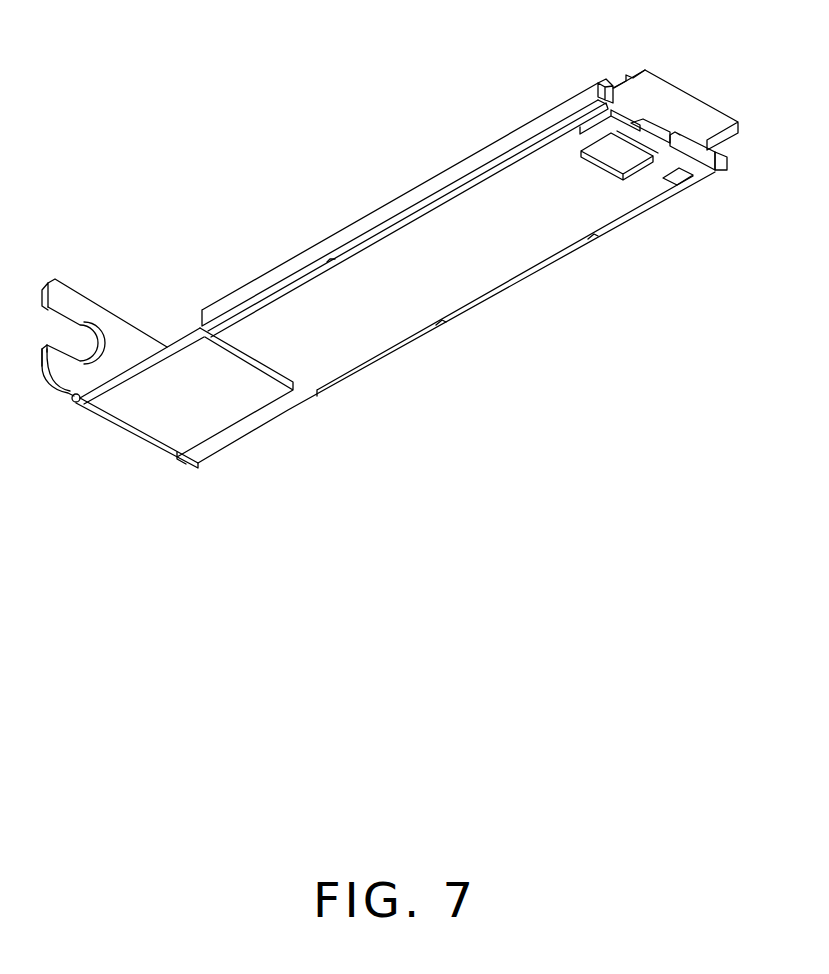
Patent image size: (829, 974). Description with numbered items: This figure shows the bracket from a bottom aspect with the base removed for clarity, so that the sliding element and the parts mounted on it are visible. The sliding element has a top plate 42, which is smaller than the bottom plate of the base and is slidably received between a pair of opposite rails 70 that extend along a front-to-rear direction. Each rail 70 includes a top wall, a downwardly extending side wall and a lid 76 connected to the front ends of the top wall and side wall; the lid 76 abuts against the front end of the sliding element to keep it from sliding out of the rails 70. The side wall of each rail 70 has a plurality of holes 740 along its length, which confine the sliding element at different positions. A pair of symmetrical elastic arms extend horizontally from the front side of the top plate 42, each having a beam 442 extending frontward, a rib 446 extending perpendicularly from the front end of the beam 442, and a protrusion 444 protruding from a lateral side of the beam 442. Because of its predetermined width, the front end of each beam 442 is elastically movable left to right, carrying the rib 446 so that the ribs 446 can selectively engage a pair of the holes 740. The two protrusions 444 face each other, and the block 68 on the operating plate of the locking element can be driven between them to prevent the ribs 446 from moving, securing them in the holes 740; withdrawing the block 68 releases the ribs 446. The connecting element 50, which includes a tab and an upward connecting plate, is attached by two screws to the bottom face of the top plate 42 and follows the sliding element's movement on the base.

The top plate 42 is at (473, 272).
The connecting element 50 is at (214, 414).
The block 68 is at (647, 145).
The rail 70 is at (541, 122).
The lid 76 is at (610, 82).
The holes 740 is at (487, 172).
The beam 442 is at (685, 155).
The protrusion 444 is at (661, 157).
The rib 446 is at (714, 140).